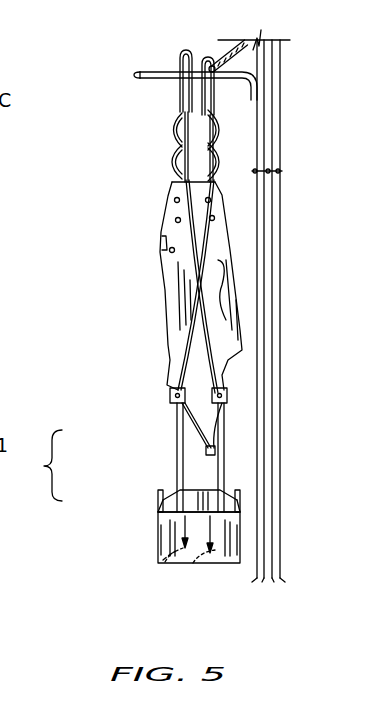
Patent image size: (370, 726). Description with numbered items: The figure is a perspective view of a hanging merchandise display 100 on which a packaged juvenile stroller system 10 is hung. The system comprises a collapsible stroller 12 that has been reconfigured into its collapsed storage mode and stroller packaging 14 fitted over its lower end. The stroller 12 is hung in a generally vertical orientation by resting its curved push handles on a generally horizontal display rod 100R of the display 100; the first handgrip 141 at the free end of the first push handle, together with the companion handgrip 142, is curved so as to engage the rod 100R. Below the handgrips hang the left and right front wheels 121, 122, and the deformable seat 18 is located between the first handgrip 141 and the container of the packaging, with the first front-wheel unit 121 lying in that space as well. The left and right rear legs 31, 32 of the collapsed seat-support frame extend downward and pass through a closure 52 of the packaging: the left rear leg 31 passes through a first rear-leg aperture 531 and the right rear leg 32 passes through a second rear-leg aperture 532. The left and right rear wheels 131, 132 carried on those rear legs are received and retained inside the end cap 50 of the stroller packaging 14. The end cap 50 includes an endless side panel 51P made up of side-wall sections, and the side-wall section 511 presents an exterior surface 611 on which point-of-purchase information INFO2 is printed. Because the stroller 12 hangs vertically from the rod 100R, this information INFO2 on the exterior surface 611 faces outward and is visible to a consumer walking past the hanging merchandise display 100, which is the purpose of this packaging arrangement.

The packaged juvenile stroller system 10 is at (34, 465).
The collapsible stroller 12 is at (148, 253).
The stroller packaging 14 is at (142, 509).
The seat 18 is at (168, 312).
The left rear leg 31 is at (232, 462).
The right rear leg 32 is at (176, 468).
The end cap 50 is at (177, 544).
The endless side panel 51P is at (256, 527).
The closure 52 is at (157, 520).
The hanging merchandise display 100 is at (288, 198).
The horizontal display rod 100R is at (160, 82).
The left front wheels 121 is at (156, 162).
The right front wheels 122 is at (158, 125).
The left rear wheels 131 is at (238, 550).
The right rear wheels 132 is at (160, 545).
The first handgrip 141 is at (203, 58).
The hooks 142 is at (187, 51).
The side-wall section 511 is at (188, 563).
The first rear-leg aperture 531 is at (222, 490).
The second rear-leg aperture 532 is at (165, 505).
The exterior surface 611 is at (157, 562).
The point-of-purchase information INFO2 is at (217, 565).